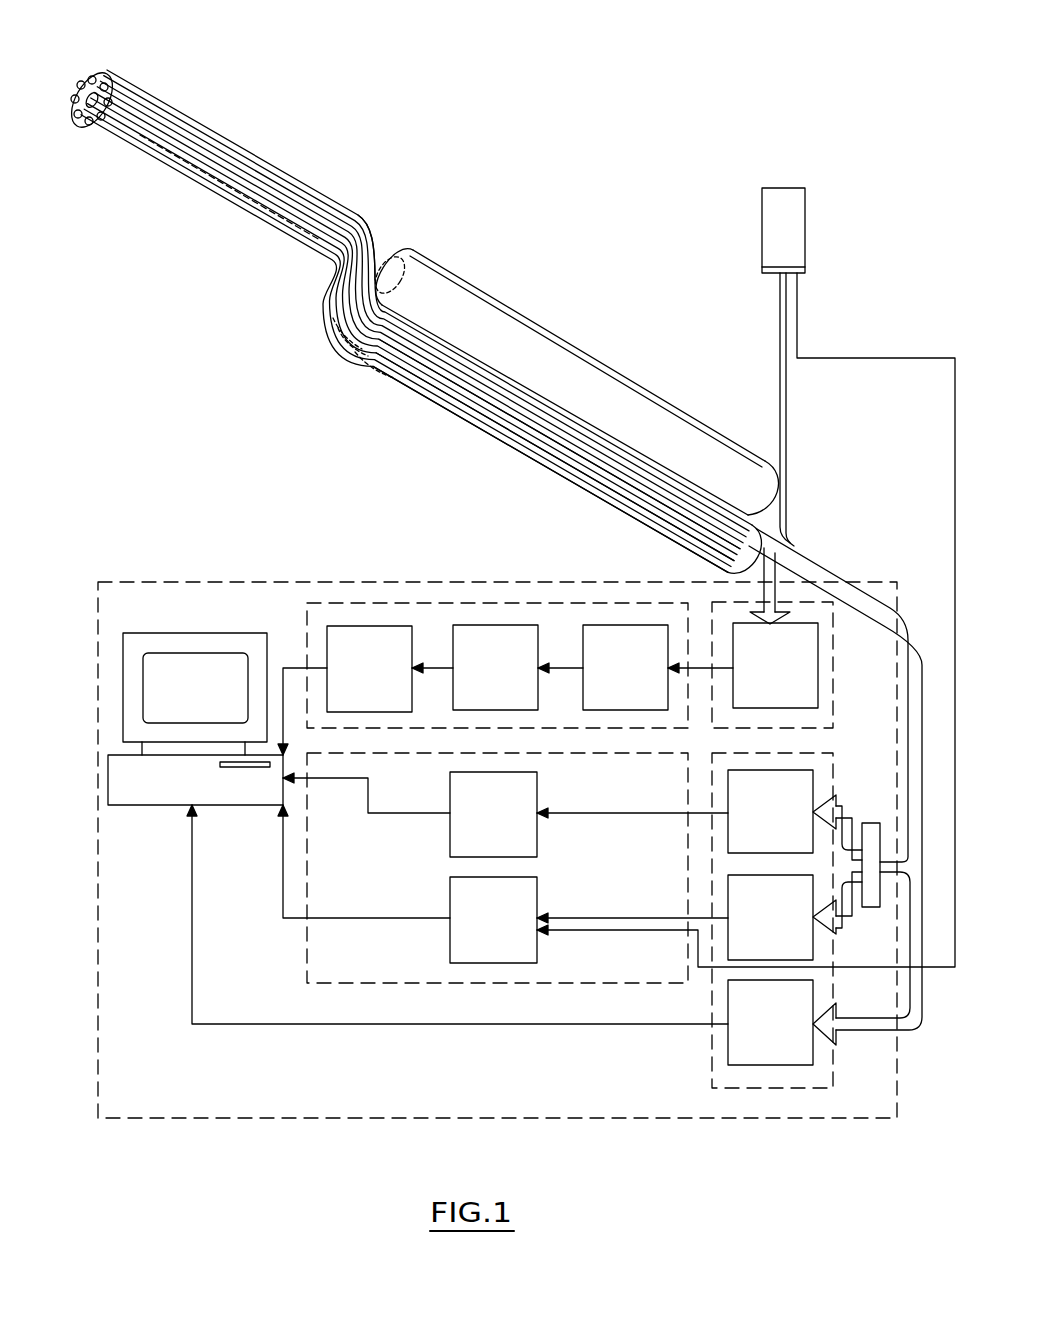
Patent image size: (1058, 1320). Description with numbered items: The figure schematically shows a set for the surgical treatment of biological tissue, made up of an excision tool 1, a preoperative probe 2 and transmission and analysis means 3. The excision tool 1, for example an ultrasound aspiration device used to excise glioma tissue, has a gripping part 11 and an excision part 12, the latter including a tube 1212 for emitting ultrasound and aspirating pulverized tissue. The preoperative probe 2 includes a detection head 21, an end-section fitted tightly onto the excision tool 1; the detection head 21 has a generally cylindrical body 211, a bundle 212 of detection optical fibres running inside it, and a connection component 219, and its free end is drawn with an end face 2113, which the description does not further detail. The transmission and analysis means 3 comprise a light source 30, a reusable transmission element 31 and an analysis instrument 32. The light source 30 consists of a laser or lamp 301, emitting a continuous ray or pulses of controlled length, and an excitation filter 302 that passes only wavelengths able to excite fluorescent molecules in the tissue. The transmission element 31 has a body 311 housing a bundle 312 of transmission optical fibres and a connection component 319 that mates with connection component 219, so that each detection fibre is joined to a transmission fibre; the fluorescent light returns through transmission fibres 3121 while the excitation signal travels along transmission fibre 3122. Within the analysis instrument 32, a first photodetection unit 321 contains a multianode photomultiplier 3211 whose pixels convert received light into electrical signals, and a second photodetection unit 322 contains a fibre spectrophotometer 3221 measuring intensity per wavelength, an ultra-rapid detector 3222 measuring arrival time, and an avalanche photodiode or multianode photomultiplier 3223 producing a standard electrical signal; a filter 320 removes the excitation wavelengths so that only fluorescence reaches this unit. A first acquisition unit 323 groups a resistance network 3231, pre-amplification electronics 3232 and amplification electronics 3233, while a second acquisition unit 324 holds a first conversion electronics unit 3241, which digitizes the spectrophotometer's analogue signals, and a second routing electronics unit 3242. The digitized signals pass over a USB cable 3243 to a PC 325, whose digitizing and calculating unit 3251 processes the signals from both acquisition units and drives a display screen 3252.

The excision tool 1 is at (527, 322).
The gripping part 11 is at (590, 370).
The preoperative probe 2 is at (286, 166).
The detection head 21 is at (183, 110).
The body 211 is at (362, 235).
The bundle of detection optical fibres 212 is at (253, 227).
The connection component 219 is at (338, 337).
The fiber bundle end face 2113 is at (75, 97).
The excision part 12 is at (157, 138).
The tube 1212 is at (217, 167).
The transmission and analysis means 3 is at (479, 430).
The light source 30 is at (762, 230).
The laser or lamp 301 is at (793, 222).
The excitation filter 302 is at (798, 270).
The transmission element 31 is at (515, 445).
The body 311 is at (613, 498).
The bundle of transmission optical fibres 312 is at (452, 398).
The connection component 319 is at (380, 372).
The transmission fibres 3121 is at (777, 557).
The transmission fibre 3122 is at (783, 432).
The analysis instrument 32 is at (225, 583).
The filter 320 is at (872, 830).
The first photodetection unit 321 is at (830, 645).
The multianode photomultiplier 3211 is at (733, 637).
The second photodetection unit 322 is at (820, 1057).
The fibre spectrophotometer 3221 is at (780, 840).
The ultra-rapid detector 3222 is at (760, 953).
The avalanche photodiode or multianode photomultiplier 3223 is at (738, 1030).
The first acquisition unit 323 is at (316, 607).
The resistance network 3231 is at (603, 637).
The pre-amplification electronics 3232 is at (490, 637).
The amplification electronics 3233 is at (363, 650).
The second acquisition unit 324 is at (325, 978).
The first conversion electronics unit 3241 is at (515, 835).
The second routing electronics unit 3242 is at (512, 940).
The USB cable 3243 is at (370, 815).
The PC 325 is at (145, 645).
The digitizing and calculating unit 3251 is at (143, 792).
The display screen 3252 is at (162, 708).